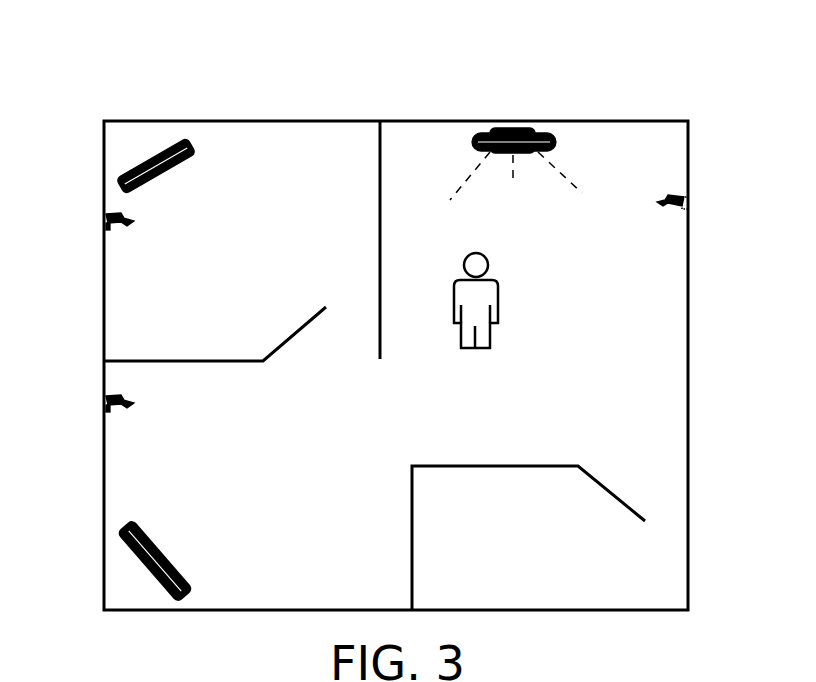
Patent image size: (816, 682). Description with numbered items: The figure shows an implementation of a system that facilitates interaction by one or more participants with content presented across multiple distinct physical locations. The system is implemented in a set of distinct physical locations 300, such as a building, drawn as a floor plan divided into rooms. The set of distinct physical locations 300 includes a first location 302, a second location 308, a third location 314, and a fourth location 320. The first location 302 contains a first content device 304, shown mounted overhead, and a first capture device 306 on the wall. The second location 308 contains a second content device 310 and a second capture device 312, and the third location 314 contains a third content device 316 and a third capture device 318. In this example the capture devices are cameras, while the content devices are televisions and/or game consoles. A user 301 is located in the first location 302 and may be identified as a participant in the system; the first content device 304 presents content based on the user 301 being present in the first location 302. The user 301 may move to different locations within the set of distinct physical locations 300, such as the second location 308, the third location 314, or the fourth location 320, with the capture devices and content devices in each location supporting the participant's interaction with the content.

The set of distinct physical locations 300 is at (408, 89).
The user 301 is at (498, 312).
The first location 302 is at (655, 277).
The first content device 304 is at (537, 142).
The first capture device 306 is at (688, 193).
The second location 308 is at (258, 464).
The second content device 310 is at (183, 580).
The second capture device 312 is at (103, 405).
The third location 314 is at (265, 251).
The third content device 316 is at (190, 138).
The third capture device 318 is at (102, 235).
The fourth location 320 is at (545, 565).